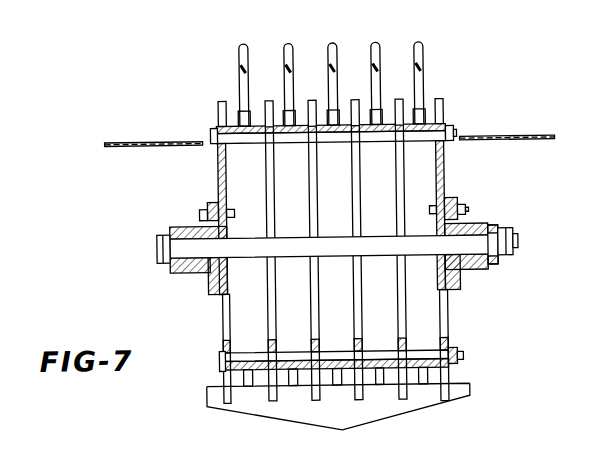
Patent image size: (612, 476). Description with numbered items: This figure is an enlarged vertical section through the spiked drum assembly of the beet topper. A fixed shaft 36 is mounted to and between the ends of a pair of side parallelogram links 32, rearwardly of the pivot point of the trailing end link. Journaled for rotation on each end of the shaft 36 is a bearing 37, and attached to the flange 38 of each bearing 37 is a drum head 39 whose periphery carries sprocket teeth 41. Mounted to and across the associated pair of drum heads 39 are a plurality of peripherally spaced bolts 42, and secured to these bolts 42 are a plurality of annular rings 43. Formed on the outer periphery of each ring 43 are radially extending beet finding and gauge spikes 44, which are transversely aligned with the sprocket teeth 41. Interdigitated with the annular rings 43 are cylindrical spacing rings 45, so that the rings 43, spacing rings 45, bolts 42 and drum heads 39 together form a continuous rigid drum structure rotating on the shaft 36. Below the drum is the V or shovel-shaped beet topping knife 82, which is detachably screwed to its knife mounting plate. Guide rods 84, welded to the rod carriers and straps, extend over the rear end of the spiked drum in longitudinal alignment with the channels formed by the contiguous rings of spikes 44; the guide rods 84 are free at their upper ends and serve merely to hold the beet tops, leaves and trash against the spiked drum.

The side parallelogram link 32 is at (172, 274).
The fixed shaft 36 is at (299, 238).
The bearing 37 is at (190, 226).
The flange 38 is at (210, 293).
The drum head 39 is at (446, 190).
The sprocket teeth 41 is at (220, 111).
The bolt 42 is at (338, 142).
The annular ring 43 is at (273, 150).
The beet finding and gauge spike 44 is at (268, 100).
The cylindrical spacing ring 45 is at (236, 122).
The beet topping knife 82 is at (308, 423).
The guide rod 84 is at (288, 43).